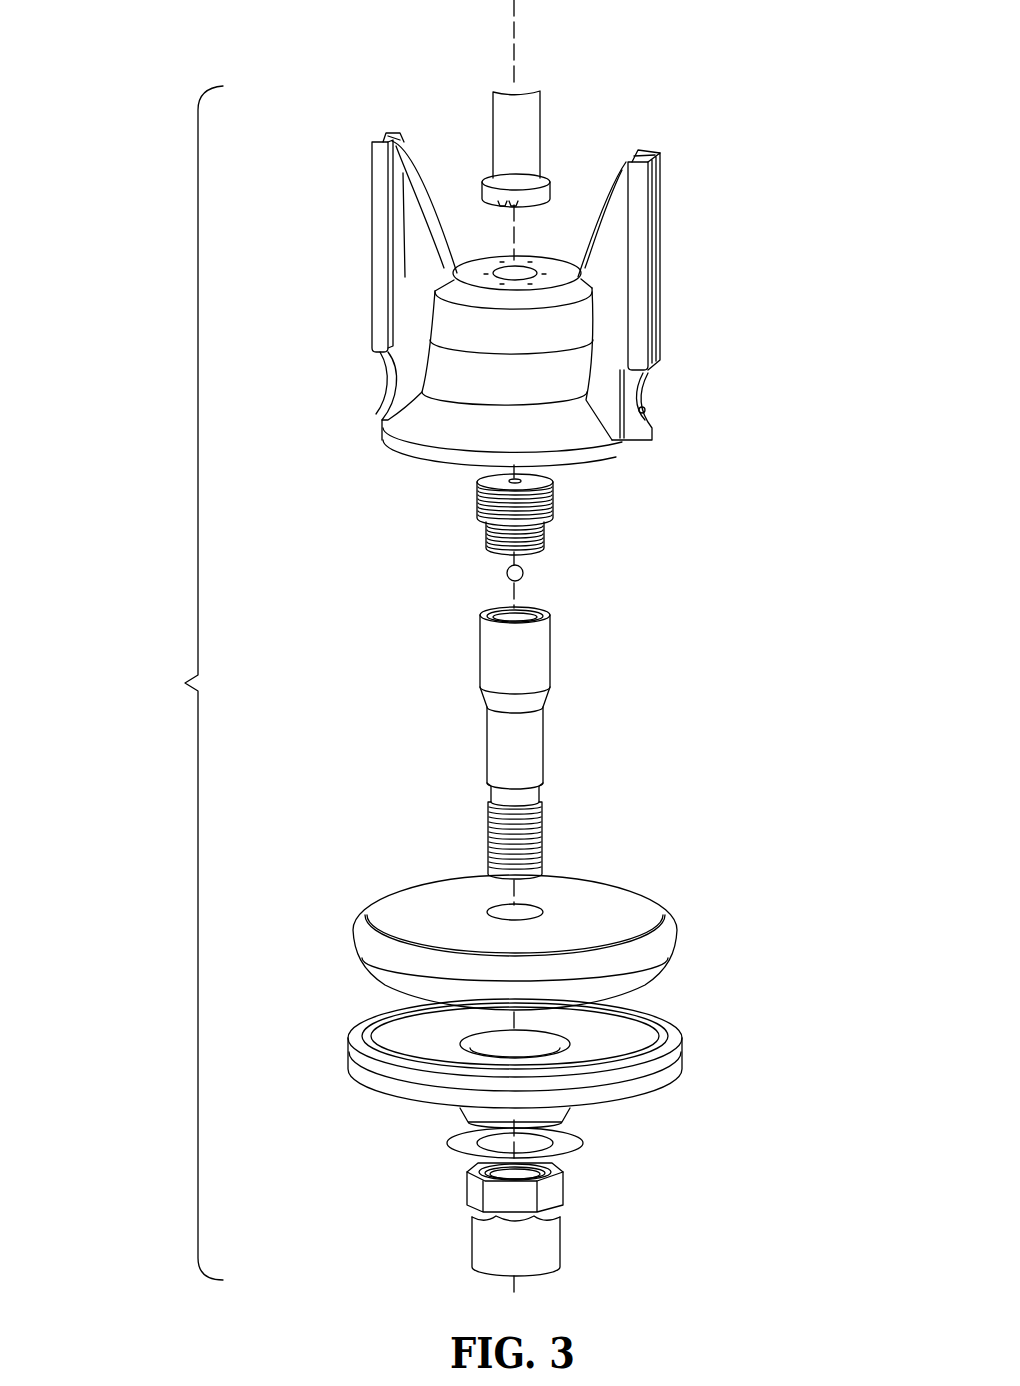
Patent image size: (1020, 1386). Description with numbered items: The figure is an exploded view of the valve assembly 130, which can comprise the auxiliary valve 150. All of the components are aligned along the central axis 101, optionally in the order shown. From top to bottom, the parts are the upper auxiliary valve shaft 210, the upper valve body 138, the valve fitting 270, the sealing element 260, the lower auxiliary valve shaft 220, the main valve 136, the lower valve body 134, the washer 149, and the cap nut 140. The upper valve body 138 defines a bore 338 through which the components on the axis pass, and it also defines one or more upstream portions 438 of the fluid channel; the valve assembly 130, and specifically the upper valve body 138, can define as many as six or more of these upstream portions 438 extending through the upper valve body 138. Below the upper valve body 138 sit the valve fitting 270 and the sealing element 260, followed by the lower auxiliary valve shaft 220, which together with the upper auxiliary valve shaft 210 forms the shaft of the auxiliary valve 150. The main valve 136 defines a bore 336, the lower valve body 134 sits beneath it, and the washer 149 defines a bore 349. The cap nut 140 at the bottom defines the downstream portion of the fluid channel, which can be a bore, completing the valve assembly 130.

The central axis 101 is at (513, 32).
The upper auxiliary valve shaft 210 is at (566, 129).
The upper valve body 138 is at (681, 266).
The bore 338 is at (517, 270).
The upstream portions of the fluid channel 438 is at (458, 282).
The valve fitting 270 is at (586, 502).
The sealing element 260 is at (547, 580).
The lower auxiliary valve shaft 220 is at (570, 741).
The bore 336 is at (535, 910).
The main valve 136 is at (569, 907).
The lower valve body 134 is at (709, 1048).
The washer 149 is at (536, 1160).
The bore 349 is at (510, 1137).
The cap nut 140 is at (587, 1246).
The valve assembly 130 is at (147, 683).
The auxiliary valve 150 is at (147, 683).